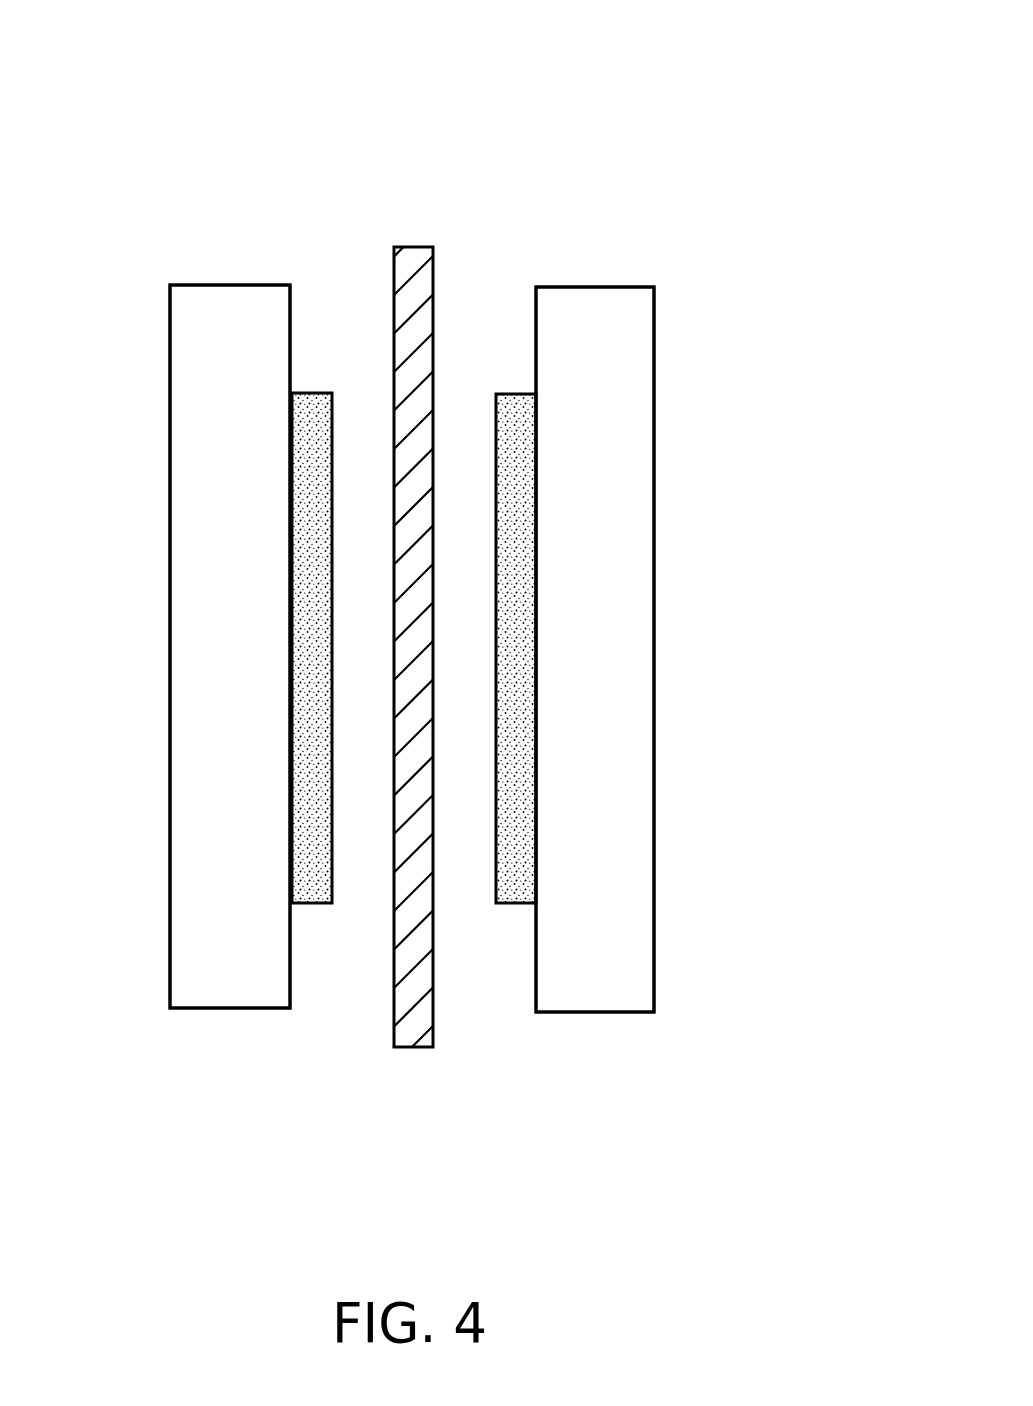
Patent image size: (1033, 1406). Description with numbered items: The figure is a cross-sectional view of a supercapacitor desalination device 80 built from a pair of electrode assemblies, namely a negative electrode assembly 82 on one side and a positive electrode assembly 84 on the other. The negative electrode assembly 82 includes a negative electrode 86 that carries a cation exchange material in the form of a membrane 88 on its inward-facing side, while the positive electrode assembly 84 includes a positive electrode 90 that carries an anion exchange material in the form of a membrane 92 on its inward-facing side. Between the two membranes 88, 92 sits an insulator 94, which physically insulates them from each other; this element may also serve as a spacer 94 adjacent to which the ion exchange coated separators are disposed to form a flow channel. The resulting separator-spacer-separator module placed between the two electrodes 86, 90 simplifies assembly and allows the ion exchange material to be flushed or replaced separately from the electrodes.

The supercapacitor desalination device 80 is at (660, 78).
The negative electrode assembly 82 is at (169, 350).
The positive electrode assembly 84 is at (657, 353).
The negative electrode 86 is at (205, 630).
The cation exchange membrane 88 is at (312, 904).
The positive electrode 90 is at (620, 630).
The anion exchange membrane 92 is at (515, 904).
The insulator 94 is at (420, 258).